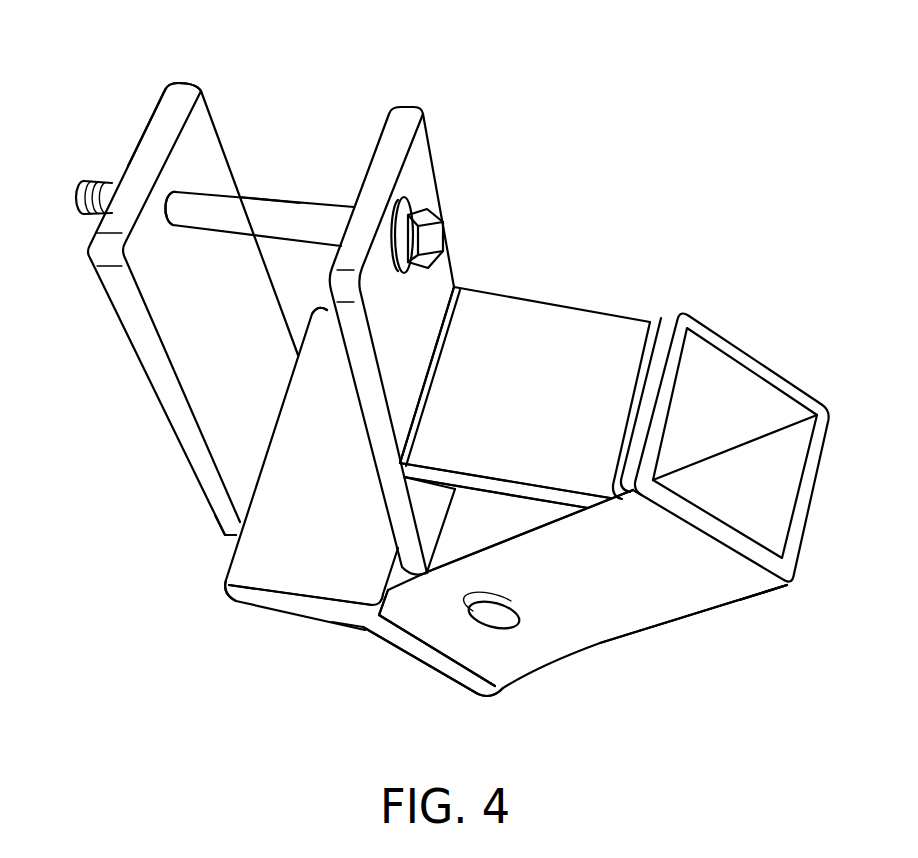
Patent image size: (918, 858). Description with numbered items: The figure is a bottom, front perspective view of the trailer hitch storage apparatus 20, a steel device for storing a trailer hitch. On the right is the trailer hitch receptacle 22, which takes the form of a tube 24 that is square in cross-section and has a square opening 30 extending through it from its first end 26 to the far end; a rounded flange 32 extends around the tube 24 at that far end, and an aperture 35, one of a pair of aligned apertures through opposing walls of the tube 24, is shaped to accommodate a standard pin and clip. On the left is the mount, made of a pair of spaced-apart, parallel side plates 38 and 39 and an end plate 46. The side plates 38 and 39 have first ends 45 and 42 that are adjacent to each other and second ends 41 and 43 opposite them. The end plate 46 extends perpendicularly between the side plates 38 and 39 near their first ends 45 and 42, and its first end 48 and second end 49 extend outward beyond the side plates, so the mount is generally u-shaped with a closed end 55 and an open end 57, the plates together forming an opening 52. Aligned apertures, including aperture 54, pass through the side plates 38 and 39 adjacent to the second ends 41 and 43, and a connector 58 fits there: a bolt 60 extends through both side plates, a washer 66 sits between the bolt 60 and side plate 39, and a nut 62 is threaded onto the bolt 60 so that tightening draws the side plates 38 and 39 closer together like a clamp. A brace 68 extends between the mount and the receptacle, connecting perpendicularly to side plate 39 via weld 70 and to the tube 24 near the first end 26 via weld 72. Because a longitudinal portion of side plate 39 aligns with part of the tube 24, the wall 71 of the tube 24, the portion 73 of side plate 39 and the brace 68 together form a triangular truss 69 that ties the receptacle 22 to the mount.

The trailer hitch storage apparatus 20 is at (651, 207).
The trailer hitch receptacle 22 is at (607, 618).
The tube 24 is at (677, 592).
The first end 26 is at (754, 568).
The opening 30 is at (750, 480).
The rounded flange 32 is at (447, 673).
The aperture 35 is at (502, 630).
The side plate 38 is at (235, 338).
The side plate 39 is at (418, 322).
The second end 41 is at (155, 127).
The first end 42 is at (397, 577).
The second end 43 is at (388, 142).
The first end 45 is at (227, 539).
The end plate 46 is at (333, 482).
The first end 48 is at (289, 608).
The second end 49 is at (323, 309).
The opening 52 is at (283, 263).
The aperture 54 is at (170, 218).
The closed end 55 is at (208, 582).
The open end 57 is at (122, 124).
The connector 58 is at (286, 59).
The bolt 60 is at (307, 220).
The nut 62 is at (115, 183).
The washer 66 is at (412, 201).
The brace 68 is at (535, 406).
The truss 69 is at (549, 540).
The weld 70 is at (440, 342).
The wall 71 is at (511, 534).
The weld 72 is at (643, 377).
The portion 73 is at (443, 520).